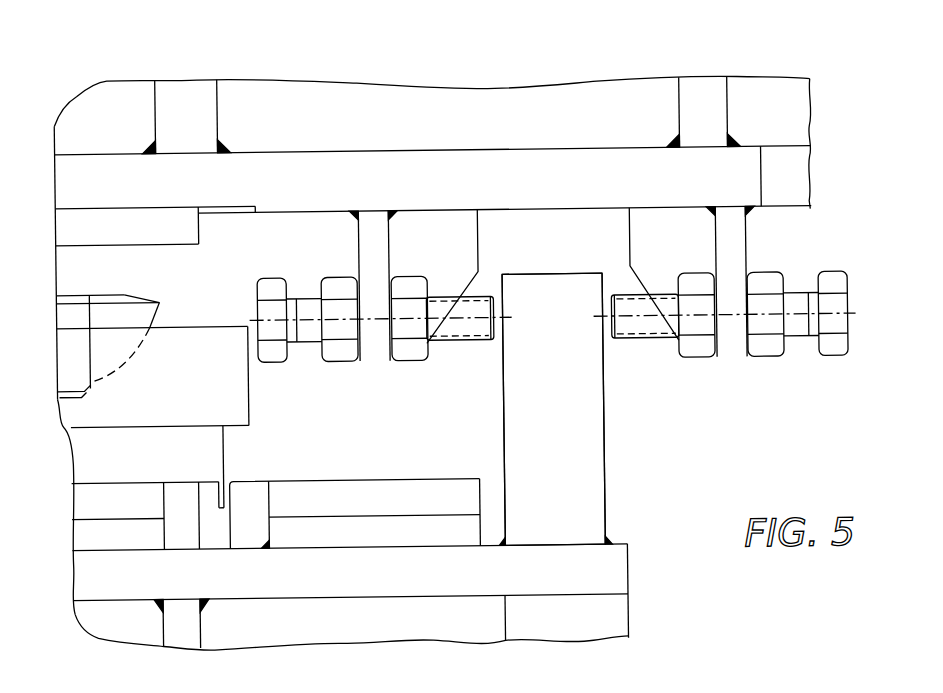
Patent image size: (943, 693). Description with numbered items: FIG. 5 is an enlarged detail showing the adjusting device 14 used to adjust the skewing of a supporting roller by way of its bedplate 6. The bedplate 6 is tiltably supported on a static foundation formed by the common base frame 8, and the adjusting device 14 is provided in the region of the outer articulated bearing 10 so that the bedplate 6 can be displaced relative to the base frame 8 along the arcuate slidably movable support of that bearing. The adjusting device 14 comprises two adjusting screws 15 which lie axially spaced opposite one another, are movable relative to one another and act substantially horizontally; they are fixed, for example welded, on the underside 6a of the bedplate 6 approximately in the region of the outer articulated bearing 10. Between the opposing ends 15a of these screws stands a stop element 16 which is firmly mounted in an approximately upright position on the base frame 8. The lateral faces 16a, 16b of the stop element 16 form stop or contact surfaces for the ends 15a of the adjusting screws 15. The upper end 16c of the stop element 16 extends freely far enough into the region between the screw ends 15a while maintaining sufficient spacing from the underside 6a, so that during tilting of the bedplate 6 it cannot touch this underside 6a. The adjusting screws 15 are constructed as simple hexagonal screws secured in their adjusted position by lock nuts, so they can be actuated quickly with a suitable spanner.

The bedplate 6 is at (600, 113).
The underside of the bedplate 6a is at (698, 211).
The base frame 8 is at (603, 578).
The outer articulated bearing 10 is at (217, 395).
The adjusting device 14 is at (680, 400).
The adjusting screws 15 is at (305, 312).
The ends of the adjusting screws 15a is at (492, 293).
The stop element 16 is at (603, 462).
The lateral face of the stop element 16a is at (503, 425).
The lateral face of the stop element 16b is at (603, 423).
The upper end of the stop element 16c is at (552, 275).